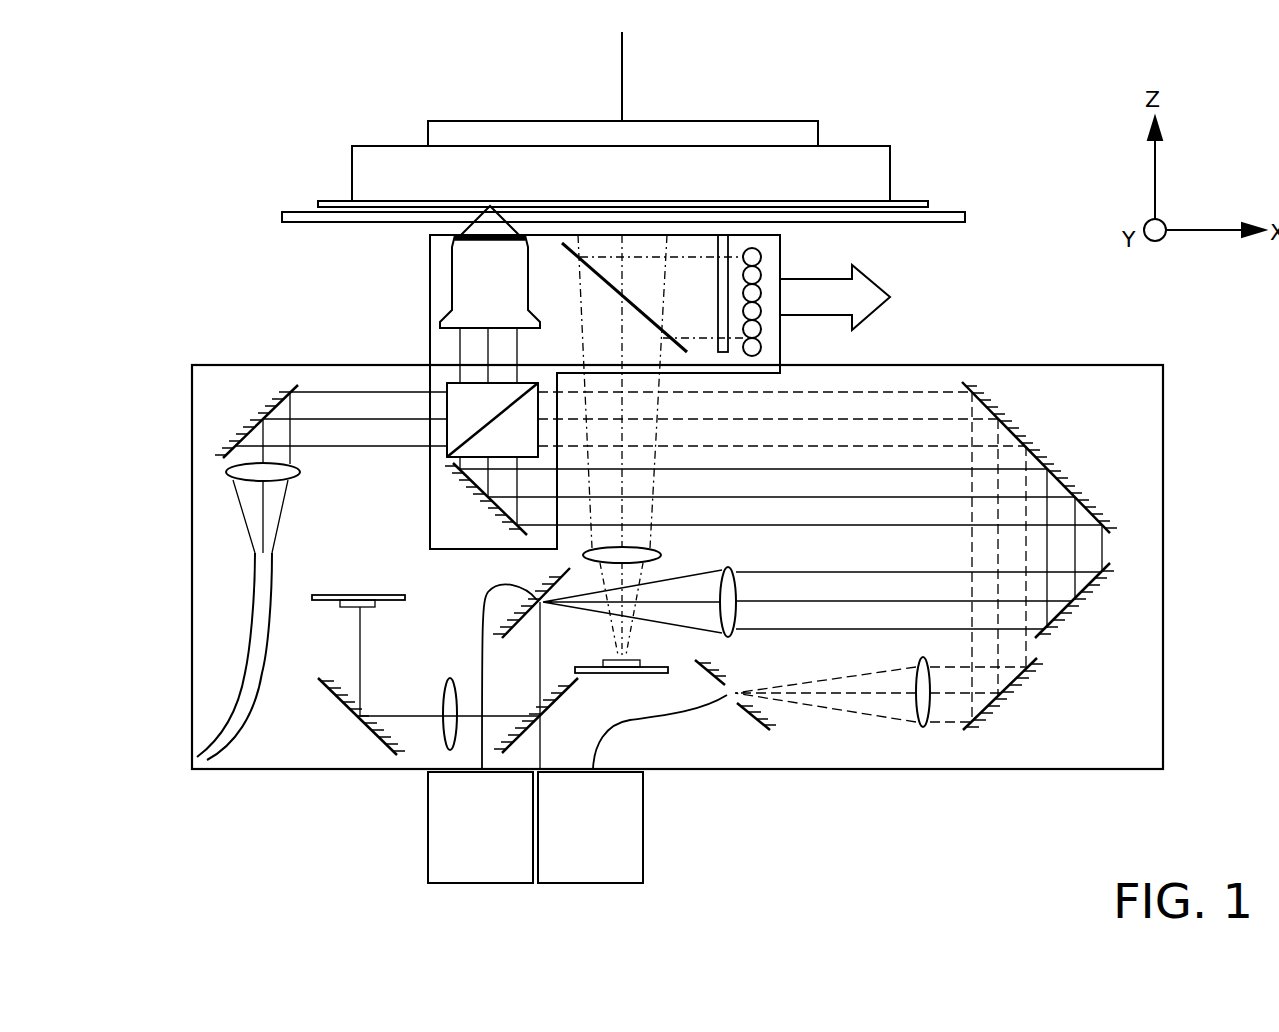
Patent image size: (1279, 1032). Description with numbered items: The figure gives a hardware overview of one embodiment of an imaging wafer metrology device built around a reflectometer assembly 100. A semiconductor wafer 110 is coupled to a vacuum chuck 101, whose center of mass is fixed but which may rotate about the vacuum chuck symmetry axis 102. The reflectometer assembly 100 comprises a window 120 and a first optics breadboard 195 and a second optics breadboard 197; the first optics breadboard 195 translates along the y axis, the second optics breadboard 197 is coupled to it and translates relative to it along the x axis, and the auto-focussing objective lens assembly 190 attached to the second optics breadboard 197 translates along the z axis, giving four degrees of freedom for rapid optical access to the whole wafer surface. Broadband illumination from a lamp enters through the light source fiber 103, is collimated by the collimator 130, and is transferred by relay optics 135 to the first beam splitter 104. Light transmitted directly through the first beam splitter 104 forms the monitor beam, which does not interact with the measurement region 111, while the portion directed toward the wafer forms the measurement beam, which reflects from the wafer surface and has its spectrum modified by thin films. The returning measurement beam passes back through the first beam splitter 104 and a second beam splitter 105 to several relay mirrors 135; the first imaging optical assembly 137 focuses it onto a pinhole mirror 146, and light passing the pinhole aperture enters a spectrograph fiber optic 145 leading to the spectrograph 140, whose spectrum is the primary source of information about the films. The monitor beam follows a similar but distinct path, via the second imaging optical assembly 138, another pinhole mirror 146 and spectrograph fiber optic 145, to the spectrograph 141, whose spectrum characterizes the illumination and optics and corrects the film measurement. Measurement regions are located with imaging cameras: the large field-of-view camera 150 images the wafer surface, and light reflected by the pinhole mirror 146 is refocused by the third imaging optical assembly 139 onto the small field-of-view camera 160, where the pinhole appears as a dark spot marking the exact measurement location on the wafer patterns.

The reflectometer assembly 100 is at (232, 99).
The vacuum chuck 101 is at (621, 160).
The vacuum chuck symmetry axis 102 is at (648, 76).
The light source fiber 103 is at (245, 673).
The first beam splitter 104 is at (460, 435).
The second beam splitter 105 is at (577, 255).
The semiconductor wafer 110 is at (928, 200).
The measurement region 111 is at (491, 206).
The window 120 is at (957, 211).
The collimator 130 is at (240, 476).
The relay optics 135 is at (257, 425).
The first imaging optical assembly 137 is at (737, 574).
The second imaging optical assembly 138 is at (920, 727).
The third imaging optical assembly 139 is at (660, 552).
The spectrograph 140 is at (480, 827).
The spectrograph 141 is at (590, 827).
The spectrograph fiber optic 145 is at (592, 744).
The pinhole mirror 146 is at (768, 732).
The large field-of-view camera 150 is at (650, 674).
The small field-of-view camera 160 is at (353, 595).
The auto-focussing objective lens assembly 190 is at (442, 320).
The first optics breadboard 195 is at (237, 365).
The second optics breadboard 197 is at (427, 279).